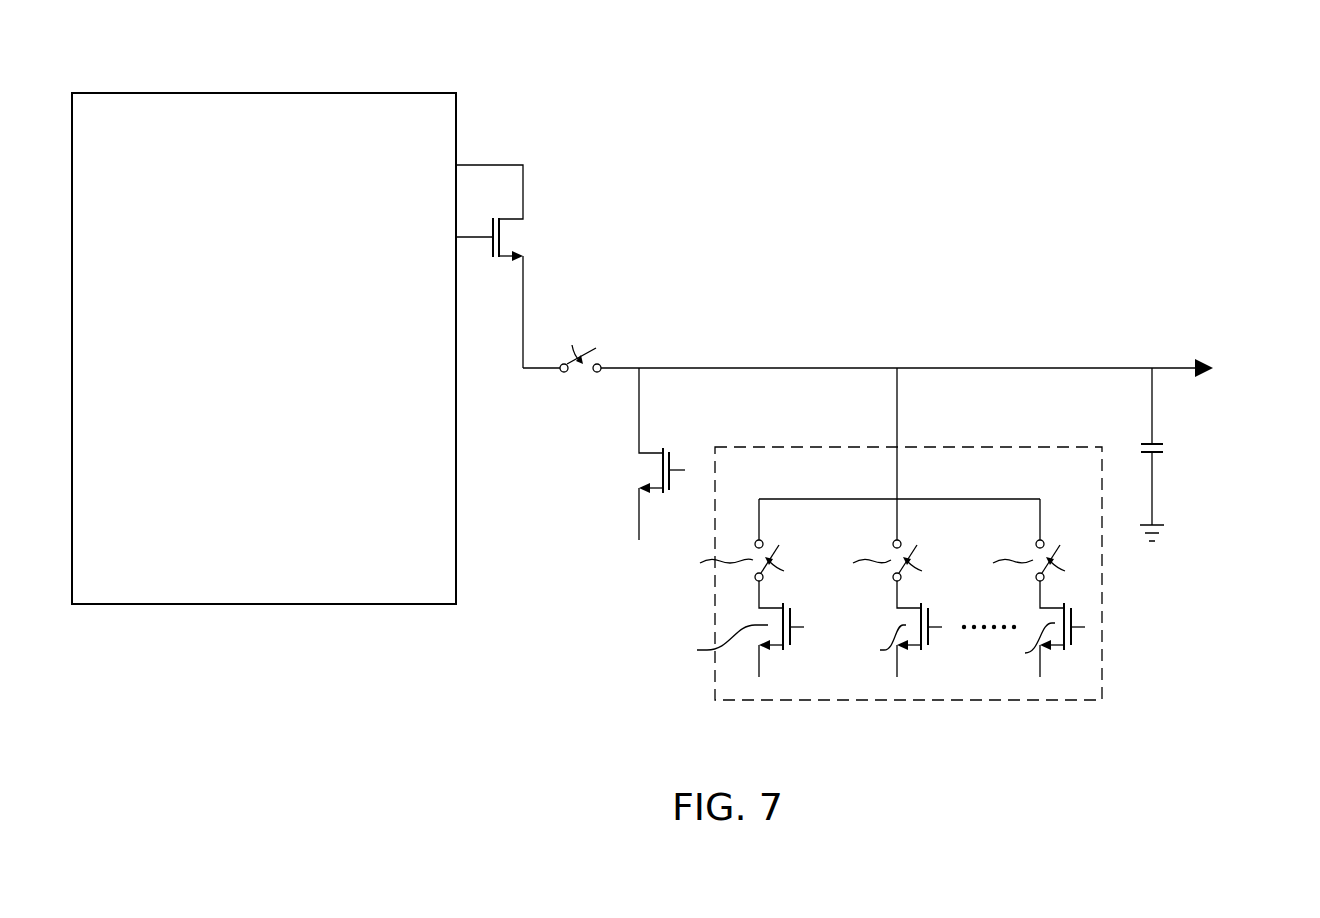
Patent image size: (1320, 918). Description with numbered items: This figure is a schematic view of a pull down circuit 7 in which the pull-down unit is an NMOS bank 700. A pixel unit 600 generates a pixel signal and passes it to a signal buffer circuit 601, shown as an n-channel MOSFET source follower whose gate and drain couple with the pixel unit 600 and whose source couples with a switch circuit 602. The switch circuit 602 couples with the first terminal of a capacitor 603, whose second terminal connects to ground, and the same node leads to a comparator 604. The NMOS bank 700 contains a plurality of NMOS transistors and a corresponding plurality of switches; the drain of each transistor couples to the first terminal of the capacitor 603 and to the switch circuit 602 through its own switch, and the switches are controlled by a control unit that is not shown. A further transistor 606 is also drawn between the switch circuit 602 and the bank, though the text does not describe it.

The pull down circuit 7 is at (1251, 177).
The pixel unit 600 is at (262, 93).
The signal buffer circuit 601 is at (524, 238).
The switch circuit 602 is at (583, 380).
The capacitor 603 is at (1168, 445).
The comparator 604 is at (1207, 361).
The current source transistor 606 is at (641, 410).
The NMOS bank 700 is at (1103, 648).